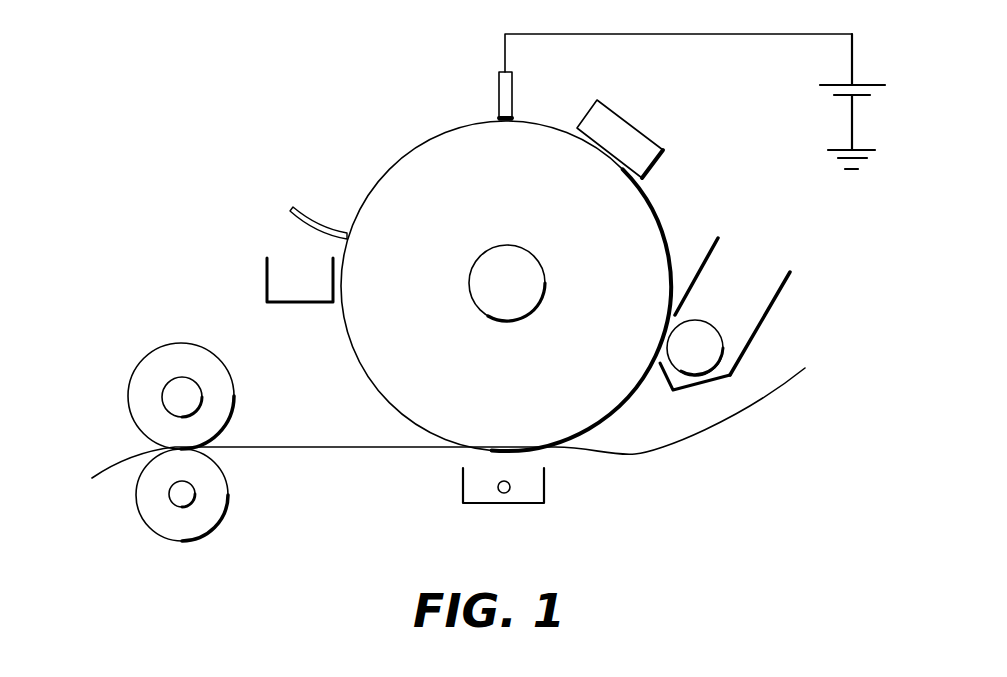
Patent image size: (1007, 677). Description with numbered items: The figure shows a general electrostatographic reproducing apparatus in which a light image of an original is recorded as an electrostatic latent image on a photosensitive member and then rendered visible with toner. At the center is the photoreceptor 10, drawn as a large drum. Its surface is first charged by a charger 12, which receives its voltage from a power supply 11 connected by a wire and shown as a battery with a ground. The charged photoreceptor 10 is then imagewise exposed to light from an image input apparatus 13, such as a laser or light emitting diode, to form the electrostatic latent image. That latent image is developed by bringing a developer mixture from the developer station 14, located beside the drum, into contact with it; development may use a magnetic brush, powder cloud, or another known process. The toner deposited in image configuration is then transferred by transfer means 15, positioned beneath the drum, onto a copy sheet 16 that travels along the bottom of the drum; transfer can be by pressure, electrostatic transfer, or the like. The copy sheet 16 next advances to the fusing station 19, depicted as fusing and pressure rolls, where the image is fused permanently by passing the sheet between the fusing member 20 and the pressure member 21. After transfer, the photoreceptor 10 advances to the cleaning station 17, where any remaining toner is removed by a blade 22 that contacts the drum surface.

The photoreceptor 10 is at (662, 218).
The power supply 11 is at (852, 61).
The charger 12 is at (510, 100).
The image input apparatus 13 is at (638, 142).
The developer station 14 is at (739, 281).
The transfer means 15 is at (544, 503).
The copy sheet 16 is at (755, 408).
The cleaning station 17 is at (278, 224).
The fusing station 19 is at (105, 401).
The fusing member 20 is at (227, 382).
The pressure member 21 is at (220, 503).
The blade 22 is at (315, 228).